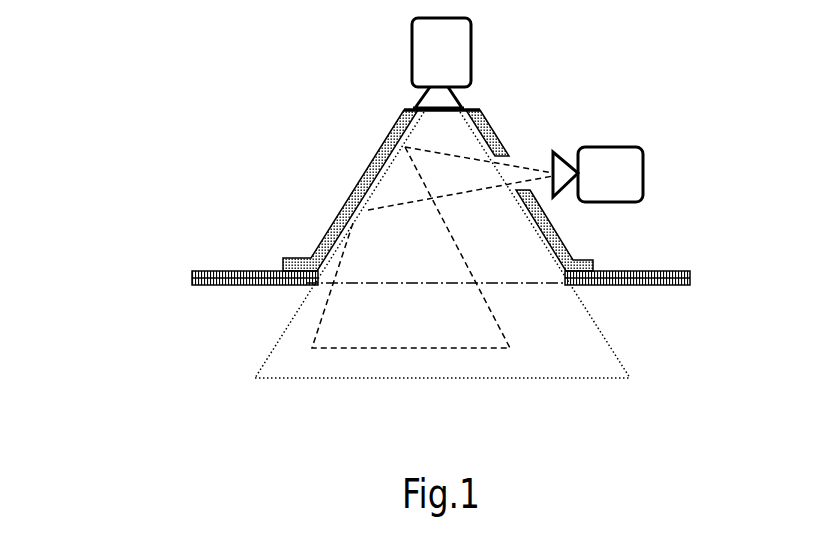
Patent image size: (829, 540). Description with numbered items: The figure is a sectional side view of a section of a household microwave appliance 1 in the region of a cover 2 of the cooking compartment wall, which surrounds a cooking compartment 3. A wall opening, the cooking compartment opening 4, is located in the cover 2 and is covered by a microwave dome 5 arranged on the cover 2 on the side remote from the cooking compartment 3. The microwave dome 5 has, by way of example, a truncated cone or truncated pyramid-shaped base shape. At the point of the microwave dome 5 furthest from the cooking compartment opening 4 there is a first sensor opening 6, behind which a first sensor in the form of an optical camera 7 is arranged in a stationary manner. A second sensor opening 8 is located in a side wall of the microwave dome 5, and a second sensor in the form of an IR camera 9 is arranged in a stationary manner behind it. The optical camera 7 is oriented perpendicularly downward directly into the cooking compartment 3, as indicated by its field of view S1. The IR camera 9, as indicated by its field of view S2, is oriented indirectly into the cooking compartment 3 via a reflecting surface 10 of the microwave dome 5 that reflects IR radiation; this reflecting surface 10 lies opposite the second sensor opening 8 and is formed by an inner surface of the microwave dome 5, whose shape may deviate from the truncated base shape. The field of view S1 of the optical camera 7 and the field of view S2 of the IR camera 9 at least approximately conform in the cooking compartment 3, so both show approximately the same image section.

The household microwave appliance 1 is at (143, 95).
The cover 2 is at (232, 270).
The cooking compartment 3 is at (214, 331).
The cooking compartment opening 4 is at (378, 285).
The microwave dome 5 is at (345, 203).
The first sensor opening 6 is at (435, 114).
The optical camera 7 is at (471, 47).
The second sensor opening 8 is at (507, 163).
The IR camera 9 is at (643, 173).
The reflecting surface 10 is at (372, 188).
The field of view of the optical camera S1 is at (613, 347).
The field of view of the IR camera S2 is at (498, 330).